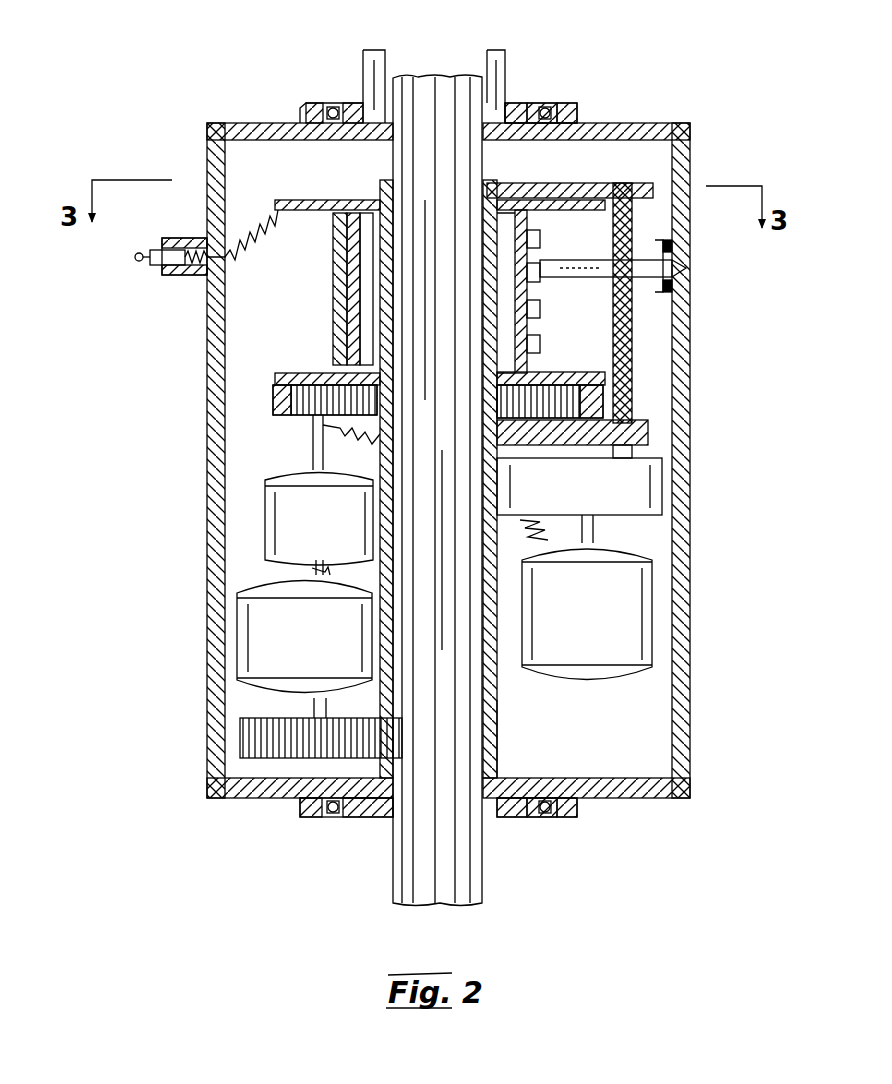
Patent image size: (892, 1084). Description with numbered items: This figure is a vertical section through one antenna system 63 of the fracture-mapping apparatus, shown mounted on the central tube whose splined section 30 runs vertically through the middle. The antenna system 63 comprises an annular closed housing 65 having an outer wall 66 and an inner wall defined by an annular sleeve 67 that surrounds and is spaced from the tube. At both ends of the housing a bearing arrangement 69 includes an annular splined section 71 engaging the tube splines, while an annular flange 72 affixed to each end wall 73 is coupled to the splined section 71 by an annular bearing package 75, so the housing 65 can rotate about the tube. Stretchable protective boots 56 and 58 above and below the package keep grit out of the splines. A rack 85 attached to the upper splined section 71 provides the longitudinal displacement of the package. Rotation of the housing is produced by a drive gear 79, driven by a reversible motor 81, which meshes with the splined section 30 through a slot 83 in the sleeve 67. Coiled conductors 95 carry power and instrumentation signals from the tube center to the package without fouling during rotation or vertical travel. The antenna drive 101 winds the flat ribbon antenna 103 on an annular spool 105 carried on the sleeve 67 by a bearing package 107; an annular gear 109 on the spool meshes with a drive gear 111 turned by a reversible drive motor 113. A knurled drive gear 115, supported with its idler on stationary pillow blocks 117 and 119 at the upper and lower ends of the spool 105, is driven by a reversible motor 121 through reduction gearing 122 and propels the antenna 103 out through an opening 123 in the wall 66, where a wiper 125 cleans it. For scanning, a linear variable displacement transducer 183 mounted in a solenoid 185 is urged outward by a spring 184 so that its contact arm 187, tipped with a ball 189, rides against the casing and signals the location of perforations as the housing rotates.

The splined section 30 is at (406, 854).
The protective boot 56 is at (528, 103).
The protective boot 58 is at (345, 817).
The antenna system 63 is at (692, 492).
The annular closed housing 65 is at (692, 742).
The outer wall 66 is at (690, 600).
The annular sleeve 67 is at (497, 716).
The bearing arrangement 69 is at (548, 103).
The annular splined section 71 is at (364, 75).
The annular flange 72 is at (577, 115).
The end wall 73 is at (250, 123).
The annular bearing package 75 is at (323, 103).
The drive gear 79 is at (240, 742).
The reversible motor 81 is at (306, 652).
The slot 83 is at (380, 718).
The rack 85 is at (382, 70).
The conductor arrangement 95 is at (500, 50).
The antenna drive 101 is at (302, 372).
The ribbon antenna 103 is at (645, 262).
The annular spool 105 is at (578, 210).
The bearing package 107 is at (368, 287).
The annular gear 109 is at (572, 397).
The drive gear 111 is at (285, 412).
The reversible drive motor 113 is at (300, 508).
The knurled drive gear 115 is at (632, 376).
The pillow block 117 is at (566, 183).
The pillow block 119 is at (648, 433).
The reversible motor 121 is at (604, 621).
The reduction gearing 122 is at (590, 498).
The opening 123 is at (680, 263).
The wiper 125 is at (672, 284).
The linear variable displacement transducer 183 is at (150, 244).
The spring 184 is at (192, 276).
The solenoid 185 is at (183, 238).
The contact arm 187 is at (147, 266).
The ball 189 is at (136, 261).